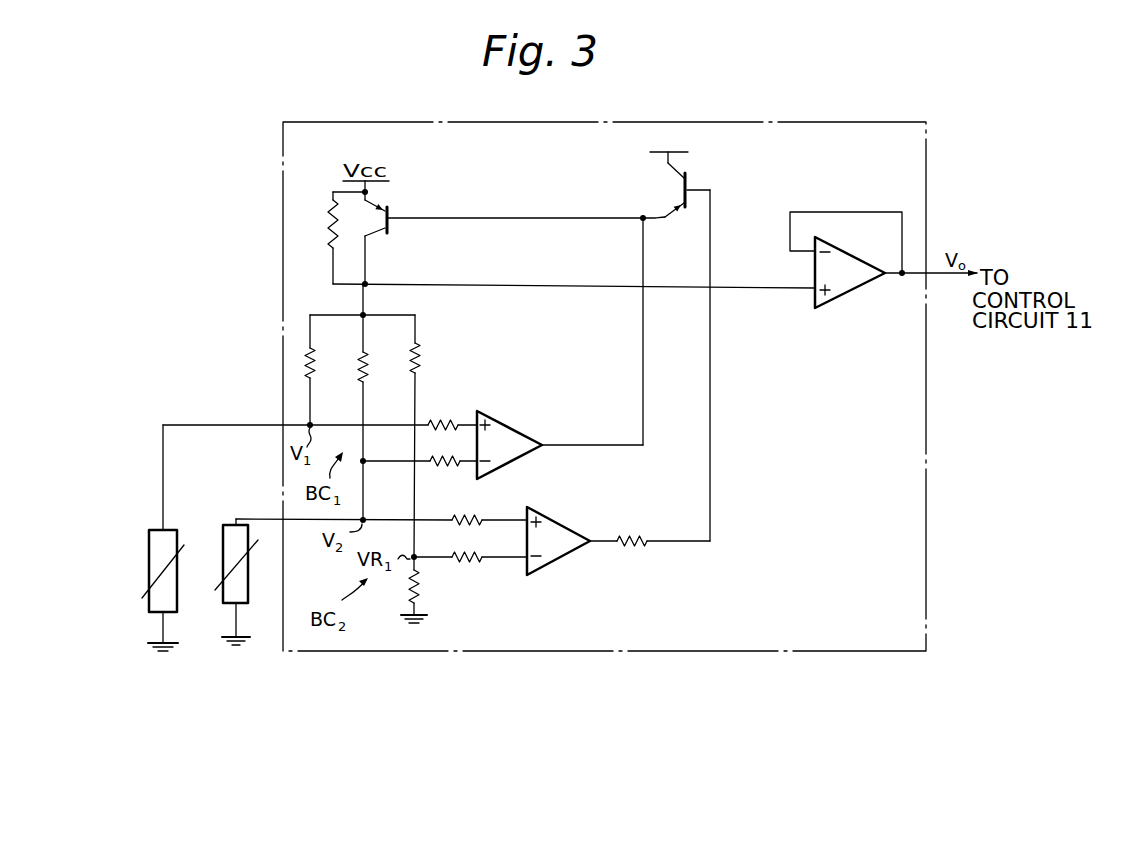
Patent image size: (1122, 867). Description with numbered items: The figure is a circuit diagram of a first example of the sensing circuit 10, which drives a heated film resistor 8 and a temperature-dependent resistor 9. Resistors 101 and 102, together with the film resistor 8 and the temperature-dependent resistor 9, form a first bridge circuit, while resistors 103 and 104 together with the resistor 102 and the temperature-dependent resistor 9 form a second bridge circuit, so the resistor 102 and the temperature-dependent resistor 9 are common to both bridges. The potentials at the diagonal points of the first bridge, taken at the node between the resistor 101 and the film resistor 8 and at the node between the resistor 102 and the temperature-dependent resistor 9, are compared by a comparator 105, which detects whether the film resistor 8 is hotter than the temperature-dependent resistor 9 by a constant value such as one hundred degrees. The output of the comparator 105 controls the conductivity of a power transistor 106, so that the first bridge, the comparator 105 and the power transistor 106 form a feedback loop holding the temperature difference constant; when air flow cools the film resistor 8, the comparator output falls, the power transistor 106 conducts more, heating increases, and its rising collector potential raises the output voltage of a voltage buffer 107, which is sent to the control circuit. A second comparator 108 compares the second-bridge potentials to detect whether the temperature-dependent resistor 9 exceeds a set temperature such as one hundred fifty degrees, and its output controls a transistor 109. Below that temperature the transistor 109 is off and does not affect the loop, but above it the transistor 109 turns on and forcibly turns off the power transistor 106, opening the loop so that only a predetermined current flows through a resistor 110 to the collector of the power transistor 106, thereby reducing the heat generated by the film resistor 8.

The film resistor 8 is at (177, 534).
The temperature-dependent resistor 9 is at (249, 582).
The sensing circuit 10 is at (838, 123).
The resistor 101 is at (315, 362).
The resistor 102 is at (368, 365).
The resistor 103 is at (421, 360).
The resistor 104 is at (419, 585).
The comparator 105 is at (517, 429).
The power transistor 106 is at (390, 224).
The voltage buffer 107 is at (847, 298).
The comparator 108 is at (567, 524).
The transistor 109 is at (698, 180).
The resistor 110 is at (329, 227).